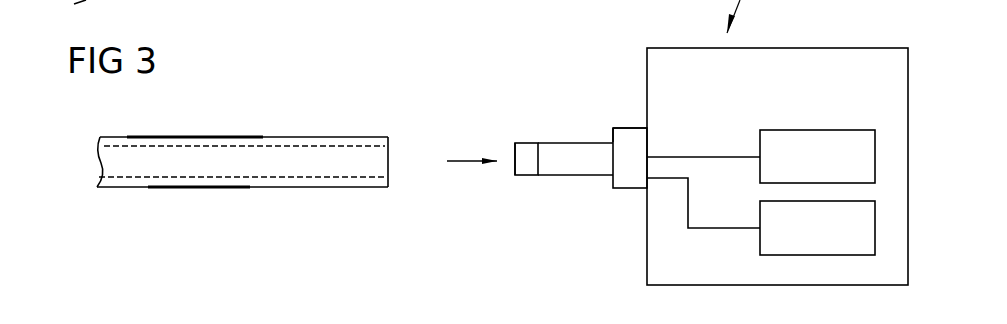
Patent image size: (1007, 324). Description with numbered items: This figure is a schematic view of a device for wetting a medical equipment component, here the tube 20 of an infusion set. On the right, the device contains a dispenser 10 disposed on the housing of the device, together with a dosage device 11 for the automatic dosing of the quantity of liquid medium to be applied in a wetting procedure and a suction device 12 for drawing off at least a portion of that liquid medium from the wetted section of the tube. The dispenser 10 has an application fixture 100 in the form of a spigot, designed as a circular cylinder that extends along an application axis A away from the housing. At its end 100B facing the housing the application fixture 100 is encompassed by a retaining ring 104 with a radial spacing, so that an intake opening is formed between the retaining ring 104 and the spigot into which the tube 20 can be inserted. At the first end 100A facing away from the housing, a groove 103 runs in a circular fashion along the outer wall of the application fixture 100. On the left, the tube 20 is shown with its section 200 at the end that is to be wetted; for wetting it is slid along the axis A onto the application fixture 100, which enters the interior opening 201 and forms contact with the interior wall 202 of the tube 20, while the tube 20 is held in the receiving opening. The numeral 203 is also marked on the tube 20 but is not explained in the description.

The dispenser 10 is at (573, 108).
The dosage device 11 is at (817, 140).
The suction device 12 is at (773, 232).
The tube 20 is at (223, 137).
The section 200 is at (347, 137).
The interior opening 201 is at (393, 161).
The interior wall 202 is at (307, 167).
The tube wall 203 is at (205, 188).
The application fixture 100 is at (558, 142).
The first end 100A is at (515, 152).
The end facing the housing 100B is at (613, 140).
The groove 103 is at (537, 171).
The retaining ring 104 is at (628, 173).
The application axis A is at (460, 163).